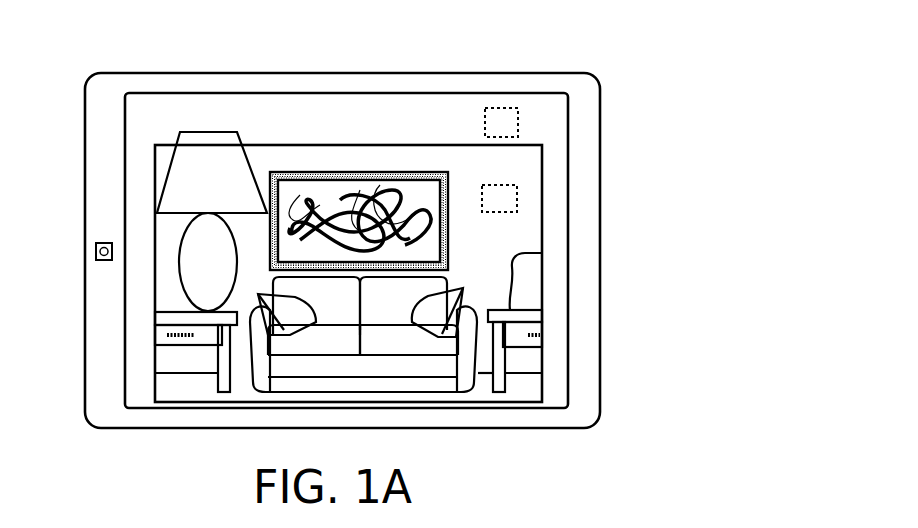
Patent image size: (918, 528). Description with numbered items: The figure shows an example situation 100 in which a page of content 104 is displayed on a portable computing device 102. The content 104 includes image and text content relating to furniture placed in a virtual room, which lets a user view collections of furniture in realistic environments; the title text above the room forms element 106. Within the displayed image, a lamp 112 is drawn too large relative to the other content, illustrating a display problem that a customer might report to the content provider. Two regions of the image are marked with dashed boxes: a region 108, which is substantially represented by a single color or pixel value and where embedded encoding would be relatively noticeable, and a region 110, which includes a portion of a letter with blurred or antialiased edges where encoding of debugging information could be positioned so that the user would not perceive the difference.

The example situation 100 is at (708, 102).
The computing device 102 is at (85, 316).
The page of content 104 is at (517, 358).
The title text 106 is at (145, 113).
The region 108 is at (515, 138).
The region 110 is at (517, 212).
The lamp 112 is at (346, 275).